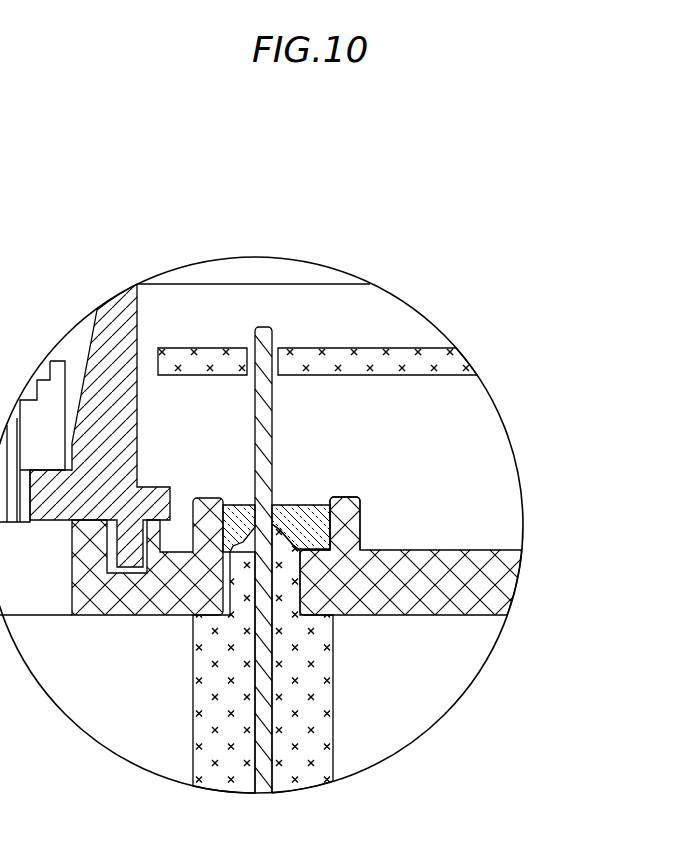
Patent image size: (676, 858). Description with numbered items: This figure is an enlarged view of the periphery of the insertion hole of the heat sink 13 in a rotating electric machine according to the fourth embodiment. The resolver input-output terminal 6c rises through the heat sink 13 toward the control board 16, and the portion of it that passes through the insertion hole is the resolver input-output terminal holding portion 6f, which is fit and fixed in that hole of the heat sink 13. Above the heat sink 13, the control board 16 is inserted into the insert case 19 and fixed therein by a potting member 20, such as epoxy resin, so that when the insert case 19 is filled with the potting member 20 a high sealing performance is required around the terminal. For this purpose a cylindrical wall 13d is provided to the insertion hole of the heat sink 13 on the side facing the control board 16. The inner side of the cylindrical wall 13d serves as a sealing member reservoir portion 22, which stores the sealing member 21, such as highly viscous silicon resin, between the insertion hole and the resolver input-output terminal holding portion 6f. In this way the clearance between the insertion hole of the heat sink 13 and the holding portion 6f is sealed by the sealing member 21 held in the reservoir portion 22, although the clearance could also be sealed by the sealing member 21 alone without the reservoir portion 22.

The insert case 19 is at (92, 333).
The control board 16 is at (407, 347).
The potting member 20 is at (380, 410).
The cylindrical wall 13d is at (331, 548).
The heat sink 13 is at (500, 590).
The sealing member 21 is at (331, 549).
The sealing member reservoir portion 22 is at (228, 548).
The resolver input-output terminal 6c is at (267, 715).
The resolver input-output terminal holding portion 6f is at (293, 673).